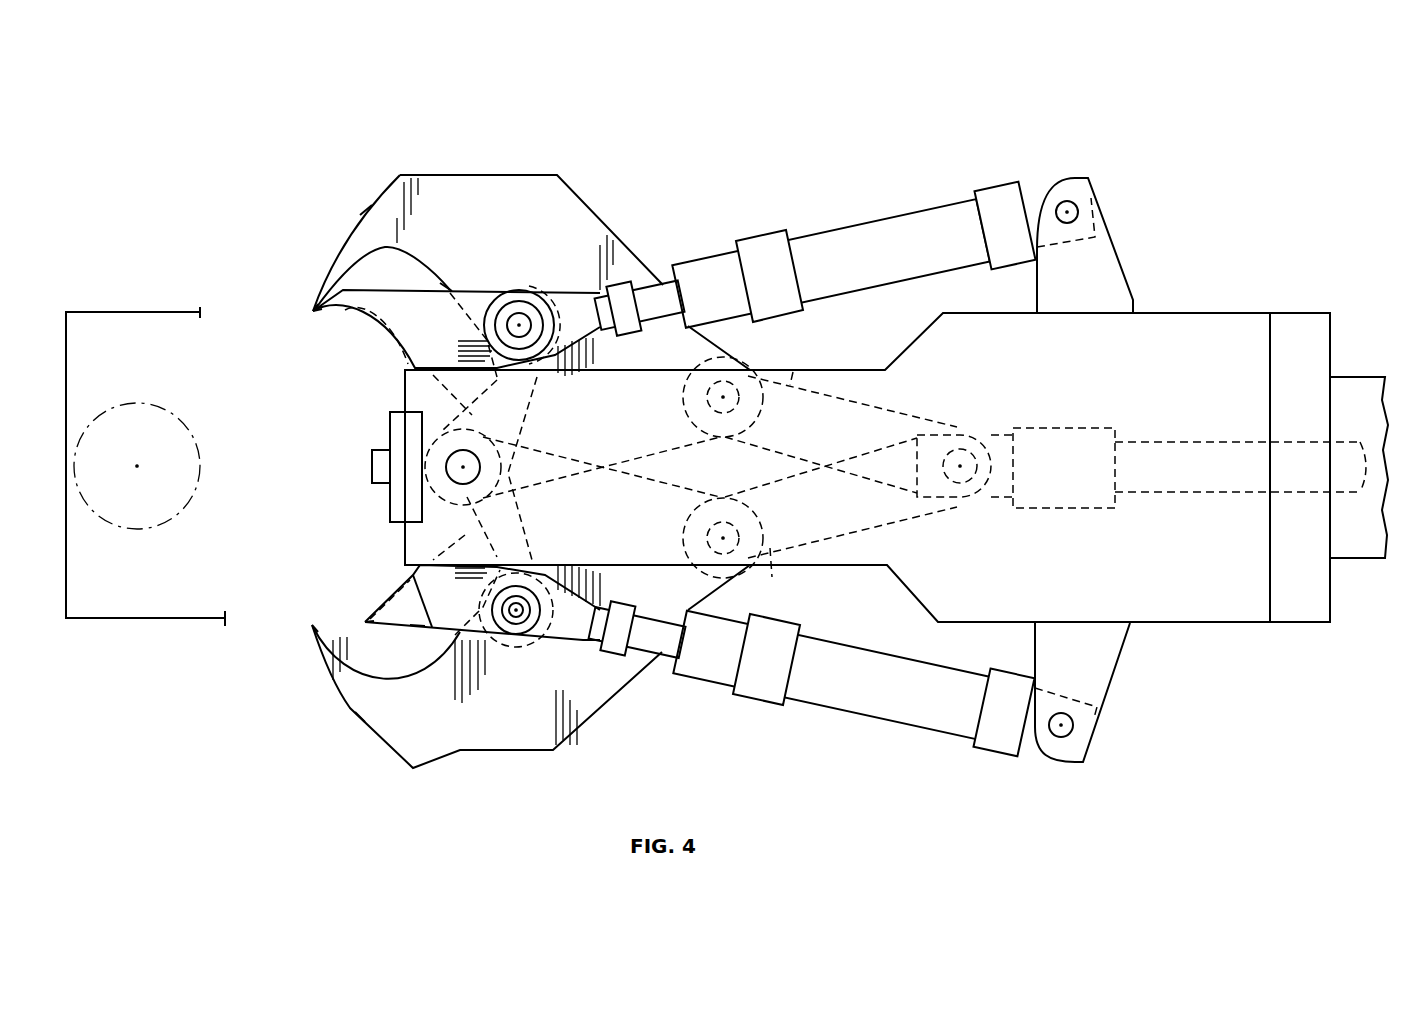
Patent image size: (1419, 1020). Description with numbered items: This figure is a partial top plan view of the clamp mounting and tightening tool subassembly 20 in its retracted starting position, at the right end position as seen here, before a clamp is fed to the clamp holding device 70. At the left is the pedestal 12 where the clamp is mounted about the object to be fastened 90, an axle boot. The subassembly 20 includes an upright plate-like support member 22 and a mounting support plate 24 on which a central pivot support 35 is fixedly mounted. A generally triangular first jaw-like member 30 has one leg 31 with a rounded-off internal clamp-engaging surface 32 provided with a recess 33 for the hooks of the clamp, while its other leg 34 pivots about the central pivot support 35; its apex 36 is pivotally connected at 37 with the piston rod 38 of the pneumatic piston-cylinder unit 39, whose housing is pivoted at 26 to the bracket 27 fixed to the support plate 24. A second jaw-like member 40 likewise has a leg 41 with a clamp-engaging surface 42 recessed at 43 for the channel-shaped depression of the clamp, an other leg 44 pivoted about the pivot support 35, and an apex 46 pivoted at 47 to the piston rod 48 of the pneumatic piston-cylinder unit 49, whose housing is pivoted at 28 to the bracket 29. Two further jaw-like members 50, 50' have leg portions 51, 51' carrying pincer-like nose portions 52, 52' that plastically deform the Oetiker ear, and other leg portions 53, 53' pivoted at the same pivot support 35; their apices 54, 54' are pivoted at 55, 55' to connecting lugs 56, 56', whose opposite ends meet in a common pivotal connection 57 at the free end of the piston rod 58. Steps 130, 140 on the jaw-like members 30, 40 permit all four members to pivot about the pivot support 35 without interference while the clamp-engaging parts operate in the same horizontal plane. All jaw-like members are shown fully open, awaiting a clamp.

The pedestal 12 is at (170, 328).
The object to be fastened 90 is at (172, 406).
The clamp mounting and tightening tool subassembly 20 is at (1148, 186).
The upright plate-like support member 22 is at (1292, 328).
The mounting support plate 24 is at (1212, 328).
The pivotal connection 26 is at (1060, 735).
The support lug or bracket 27 is at (1107, 668).
The pivotal connection 28 is at (1066, 203).
The lug or bracket 29 is at (1103, 253).
The first jaw-like member 30 is at (452, 640).
The leg of first jaw-like member 31 is at (393, 623).
The clamp-engaging surface 32 is at (398, 594).
The recess 33 is at (382, 603).
The leg of first jaw-like member 34 is at (500, 508).
The central pivot support 35 is at (457, 470).
The apex of first jaw-like member 36 is at (557, 643).
The pivotal connection 37 is at (515, 612).
The piston rod 38 is at (661, 640).
The pneumatic piston-cylinder unit 39 is at (929, 737).
The second jaw-like member 40 is at (482, 288).
The leg of second jaw-like member 41 is at (396, 300).
The clamp-engaging surface 42 is at (330, 318).
The recess 43 is at (384, 333).
The leg of second jaw-like member 44 is at (538, 398).
The apex of second jaw-like member 46 is at (560, 297).
The pivotal connection 47 is at (520, 322).
The piston rod 48 is at (660, 286).
The pneumatic piston-cylinder unit 49 is at (875, 211).
The further jaw-like member 50 is at (487, 707).
The further jaw-like member 50' is at (488, 230).
The leg portion 51 is at (346, 732).
The leg portion 51' is at (350, 196).
The pincer-like nose portion 52 is at (288, 640).
The pincer-like nose portion 52' is at (296, 285).
The leg portion 53 is at (601, 461).
The leg portion 53' is at (601, 477).
The apex of further jaw-like member 54 is at (784, 572).
The apex of further jaw-like member 54' is at (817, 354).
The pivotal connection 55 is at (800, 508).
The pivotal connection 55' is at (800, 409).
The connecting lug 56 is at (855, 533).
The connecting lug 56' is at (852, 400).
The common pivotal connection 57 is at (972, 448).
The piston rod 58 is at (1180, 440).
The clamp holding device 70 is at (369, 462).
The step 130 is at (418, 632).
The step 140 is at (418, 290).